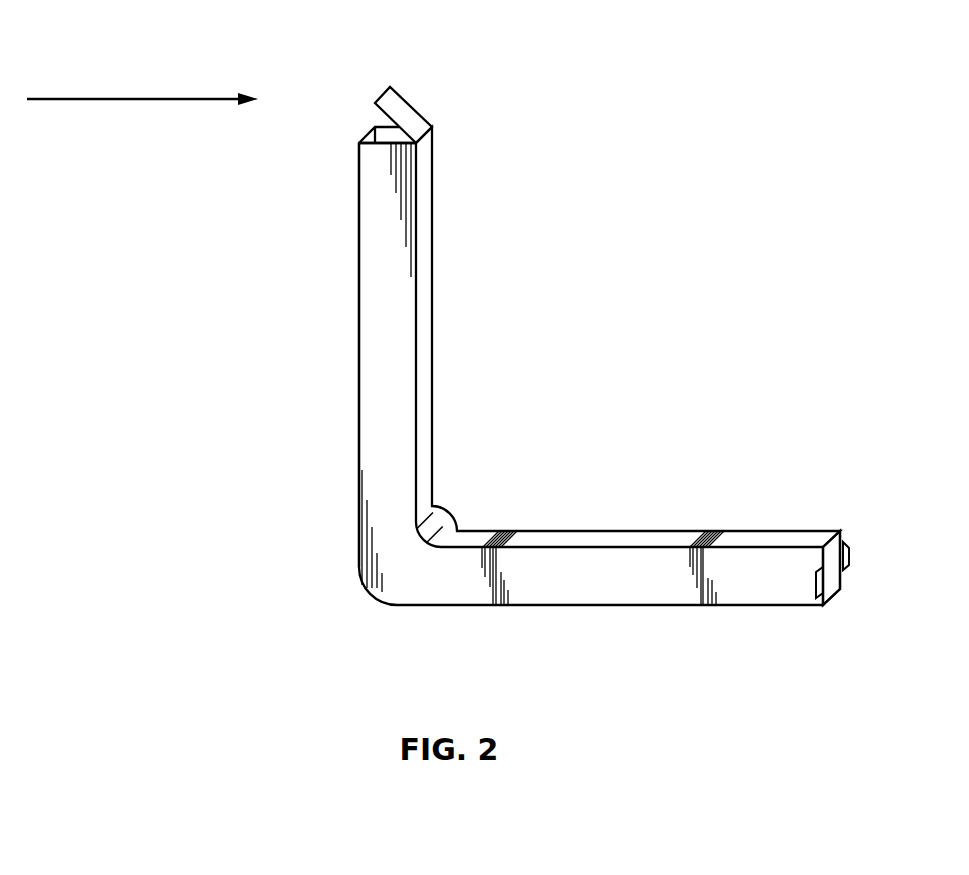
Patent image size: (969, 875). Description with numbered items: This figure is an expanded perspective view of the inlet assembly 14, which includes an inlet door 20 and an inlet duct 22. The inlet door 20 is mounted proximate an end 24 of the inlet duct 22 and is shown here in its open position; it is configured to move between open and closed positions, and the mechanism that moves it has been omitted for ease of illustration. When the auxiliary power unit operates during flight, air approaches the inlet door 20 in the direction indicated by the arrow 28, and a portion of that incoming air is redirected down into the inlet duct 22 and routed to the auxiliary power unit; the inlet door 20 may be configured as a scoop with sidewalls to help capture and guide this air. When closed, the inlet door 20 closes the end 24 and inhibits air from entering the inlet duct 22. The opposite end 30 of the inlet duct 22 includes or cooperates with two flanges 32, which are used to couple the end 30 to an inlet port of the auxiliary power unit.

The inlet assembly 14 is at (474, 614).
The inlet door 20 is at (388, 85).
The inlet duct 22 is at (358, 403).
The end of inlet duct 24 is at (373, 133).
The arrow 28 is at (144, 98).
The end of inlet duct 30 is at (828, 540).
The flanges 32 is at (850, 552).